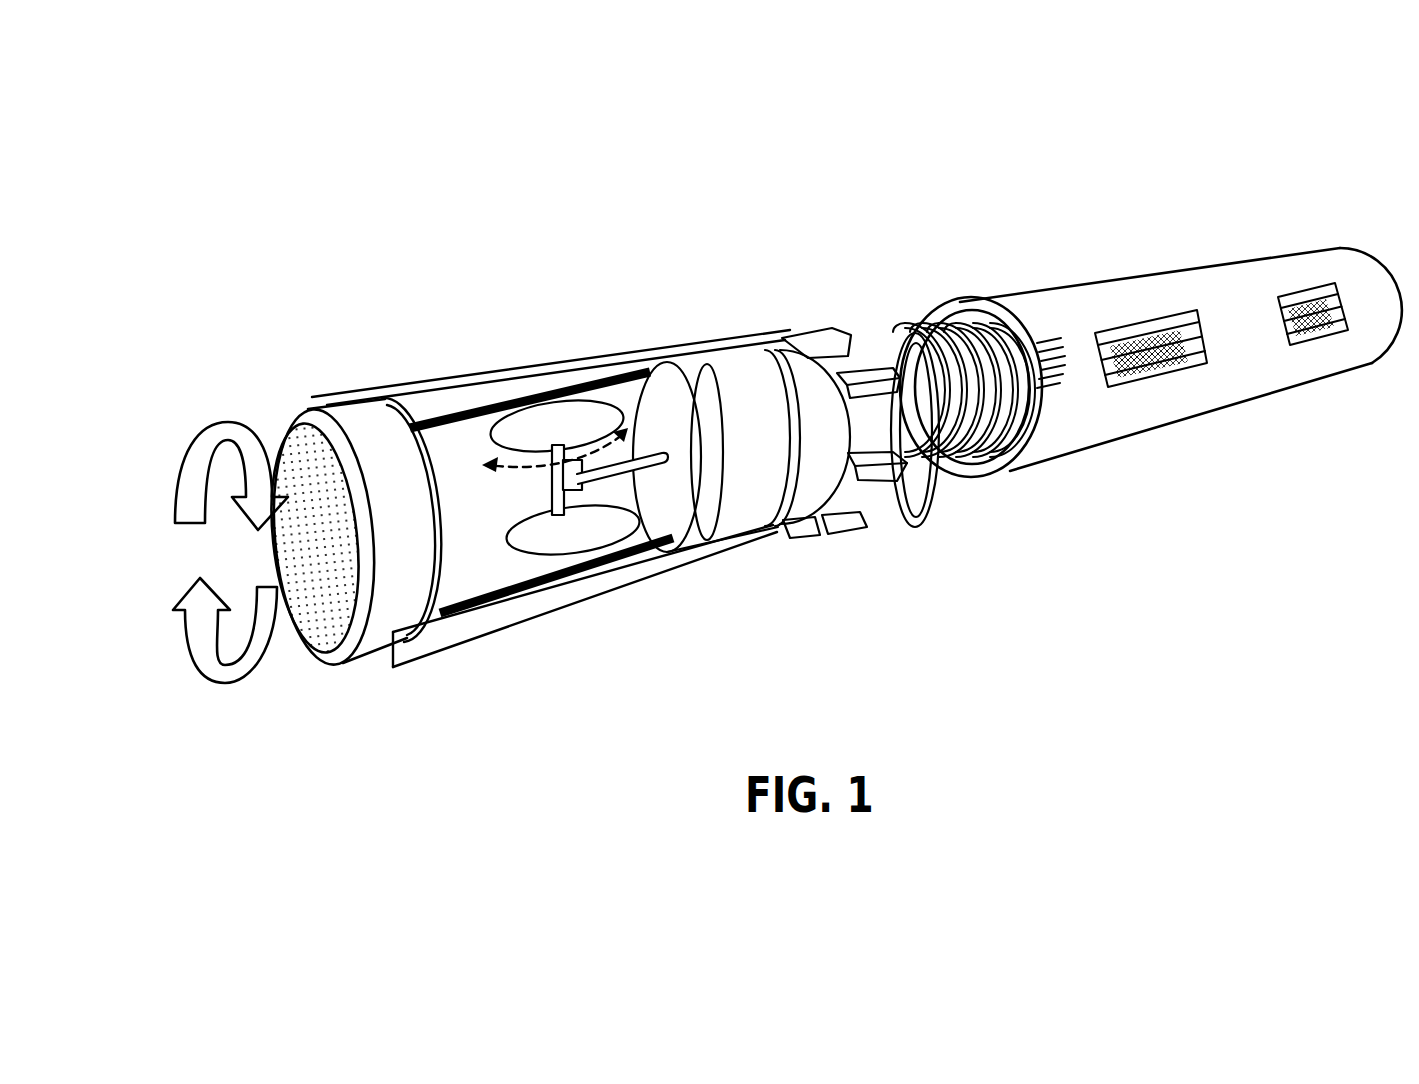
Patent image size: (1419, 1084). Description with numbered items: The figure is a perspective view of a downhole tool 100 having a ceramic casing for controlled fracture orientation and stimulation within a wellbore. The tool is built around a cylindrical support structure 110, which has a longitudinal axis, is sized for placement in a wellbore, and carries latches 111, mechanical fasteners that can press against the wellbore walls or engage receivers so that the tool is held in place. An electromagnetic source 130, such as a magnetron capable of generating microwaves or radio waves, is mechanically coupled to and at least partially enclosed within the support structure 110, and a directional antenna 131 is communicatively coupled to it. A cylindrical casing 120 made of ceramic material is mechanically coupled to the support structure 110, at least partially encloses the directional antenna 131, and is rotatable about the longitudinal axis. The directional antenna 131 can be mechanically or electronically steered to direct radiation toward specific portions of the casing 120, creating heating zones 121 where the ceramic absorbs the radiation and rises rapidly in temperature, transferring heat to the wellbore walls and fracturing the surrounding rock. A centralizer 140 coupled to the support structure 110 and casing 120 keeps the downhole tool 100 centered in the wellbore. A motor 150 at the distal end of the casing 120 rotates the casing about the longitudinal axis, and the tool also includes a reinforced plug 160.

The downhole tool 100 is at (750, 468).
The support structure 110 is at (1271, 270).
The latches 111 is at (1333, 320).
The casing 120 is at (495, 372).
The heating zones 121 is at (627, 377).
The electromagnetic source 130 is at (948, 317).
The directional antenna 131 is at (577, 530).
The centralizer 140 is at (830, 528).
The motor 150 is at (390, 633).
The reinforced plug 160 is at (273, 550).